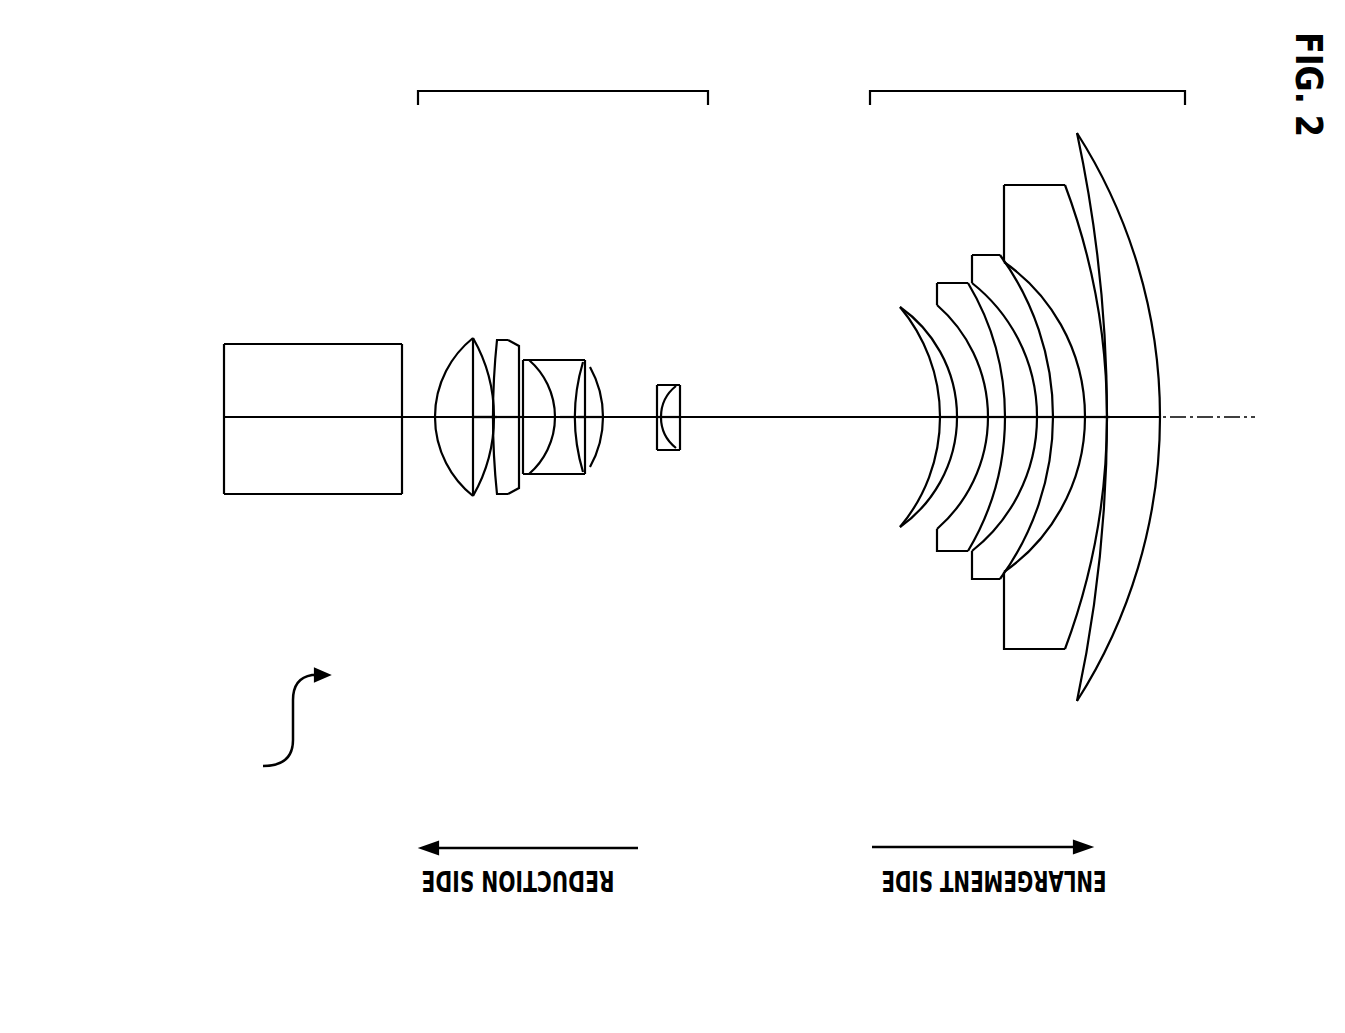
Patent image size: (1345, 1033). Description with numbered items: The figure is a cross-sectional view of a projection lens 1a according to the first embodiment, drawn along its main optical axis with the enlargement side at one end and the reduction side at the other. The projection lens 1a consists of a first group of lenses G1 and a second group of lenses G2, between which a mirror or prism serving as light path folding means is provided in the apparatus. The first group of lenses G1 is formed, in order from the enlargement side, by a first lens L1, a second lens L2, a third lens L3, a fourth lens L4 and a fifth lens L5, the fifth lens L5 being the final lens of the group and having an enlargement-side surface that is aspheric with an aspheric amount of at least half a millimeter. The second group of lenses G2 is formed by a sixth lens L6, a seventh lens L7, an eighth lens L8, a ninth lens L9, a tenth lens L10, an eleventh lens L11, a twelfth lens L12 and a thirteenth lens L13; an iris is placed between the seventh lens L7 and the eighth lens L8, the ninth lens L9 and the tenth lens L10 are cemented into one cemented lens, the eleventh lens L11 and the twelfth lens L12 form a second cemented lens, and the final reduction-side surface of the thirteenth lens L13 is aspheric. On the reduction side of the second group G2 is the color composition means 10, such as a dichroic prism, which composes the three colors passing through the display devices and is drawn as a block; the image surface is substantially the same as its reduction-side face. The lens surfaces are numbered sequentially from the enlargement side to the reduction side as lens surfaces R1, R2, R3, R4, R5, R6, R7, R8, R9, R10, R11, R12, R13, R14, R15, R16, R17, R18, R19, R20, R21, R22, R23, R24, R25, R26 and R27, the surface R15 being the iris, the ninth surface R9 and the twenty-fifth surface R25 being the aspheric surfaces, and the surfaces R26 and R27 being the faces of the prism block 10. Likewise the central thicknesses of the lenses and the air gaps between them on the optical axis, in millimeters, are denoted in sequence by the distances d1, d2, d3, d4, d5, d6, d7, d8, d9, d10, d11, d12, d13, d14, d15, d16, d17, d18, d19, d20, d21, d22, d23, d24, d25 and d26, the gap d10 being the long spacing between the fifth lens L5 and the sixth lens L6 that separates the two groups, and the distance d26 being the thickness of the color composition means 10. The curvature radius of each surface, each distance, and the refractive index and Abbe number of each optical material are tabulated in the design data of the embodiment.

The projection lens 1a is at (283, 722).
The color composition means 10 is at (302, 404).
The first group of lenses G1 is at (1027, 80).
The second group of lenses G2 is at (563, 80).
The first lens L1 is at (1085, 429).
The second lens L2 is at (1024, 433).
The third lens L3 is at (981, 414).
The fourth lens L4 is at (927, 413).
The fifth lens L5 is at (881, 408).
The sixth lens L6 is at (711, 409).
The seventh lens L7 is at (648, 420).
The eighth lens L8 is at (612, 380).
The ninth lens L9 is at (559, 394).
The tenth lens L10 is at (531, 383).
The eleventh lens L11 is at (465, 428).
The twelfth lens L12 is at (439, 403).
The thirteenth lens L13 is at (436, 396).
The first lens surface R1 is at (1117, 632).
The second lens surface R2 is at (1077, 692).
The third lens surface R3 is at (1035, 656).
The fourth lens surface R4 is at (1003, 595).
The fifth lens surface R5 is at (1018, 597).
The sixth lens surface R6 is at (978, 586).
The seventh lens surface R7 is at (949, 568).
The eighth lens surface R8 is at (916, 544).
The ninth lens surface R9 is at (891, 522).
The tenth lens surface R10 is at (889, 500).
The eleventh lens surface R11 is at (676, 450).
The twelfth lens surface R12 is at (664, 450).
The thirteenth lens surface R13 is at (658, 452).
The fourteenth lens surface R14 is at (647, 477).
The iris R15 is at (650, 480).
The sixteenth lens surface R16 is at (640, 465).
The seventeenth lens surface R17 is at (580, 477).
The eighteenth lens surface R18 is at (577, 480).
The nineteenth lens surface R19 is at (585, 483).
The twentieth lens surface R20 is at (520, 483).
The twenty-first lens surface R21 is at (518, 505).
The twenty-second lens surface R22 is at (480, 487).
The twenty-third lens surface R23 is at (465, 497).
The twenty-fourth lens surface R24 is at (455, 473).
The twenty-fifth lens surface R25 is at (457, 460).
The twenty-sixth surface R26 is at (407, 494).
The twenty-seventh surface R27 is at (224, 495).
The central thickness of first lens d1 is at (1133, 426).
The air gap between first and second lenses d2 is at (1112, 424).
The central thickness of second lens d3 is at (1095, 440).
The air gap between second and third lenses d4 is at (1069, 427).
The central thickness of third lens d5 is at (1045, 425).
The air gap between third and fourth lenses d6 is at (1021, 427).
The central thickness of fourth lens d7 is at (996, 419).
The air gap between fourth and fifth lenses d8 is at (972, 427).
The central thickness of fifth lens d9 is at (941, 416).
The air gap between fifth and sixth lenses d10 is at (810, 429).
The central thickness of sixth lens d11 is at (686, 410).
The air gap between sixth and seventh lenses d12 is at (688, 388).
The central thickness of seventh lens d13 is at (683, 387).
The air gap between seventh lens and iris d14 is at (657, 385).
The air gap between iris and eighth lens d15 is at (596, 420).
The central thickness of eighth lens d16 is at (650, 390).
The air gap between eighth and ninth lenses d17 is at (597, 365).
The central thickness of ninth lens d18 is at (593, 363).
The central thickness of tenth lens d19 is at (563, 360).
The air gap between tenth and eleventh lenses d20 is at (540, 358).
The central thickness of eleventh lens d21 is at (473, 343).
The central thickness of twelfth lens d22 is at (485, 375).
The air gap between twelfth and thirteenth lenses d23 is at (470, 405).
The central thickness of thirteenth lens d24 is at (452, 444).
The air gap between thirteenth lens and prism d25 is at (413, 412).
The thickness of color composition means d26 is at (313, 431).